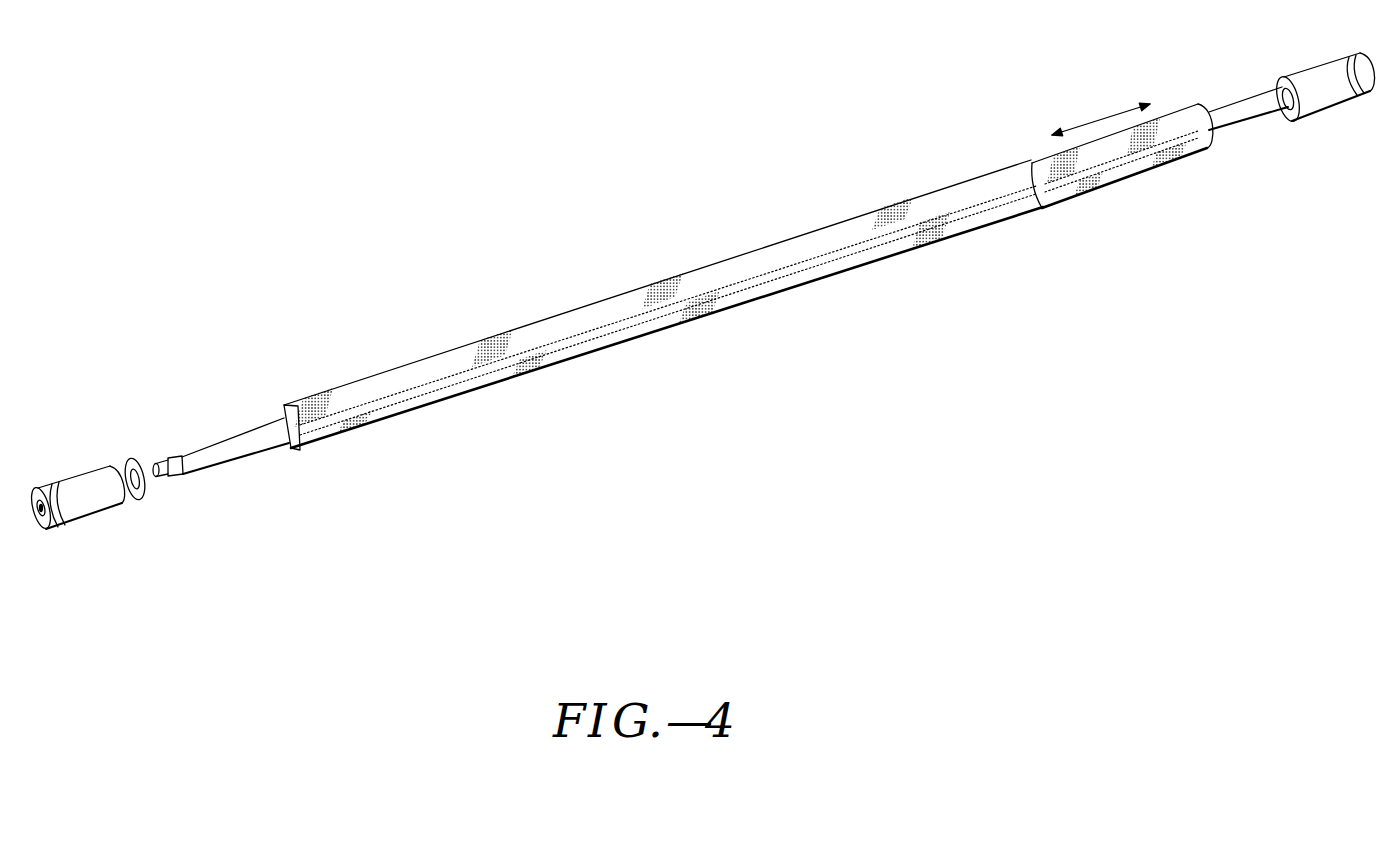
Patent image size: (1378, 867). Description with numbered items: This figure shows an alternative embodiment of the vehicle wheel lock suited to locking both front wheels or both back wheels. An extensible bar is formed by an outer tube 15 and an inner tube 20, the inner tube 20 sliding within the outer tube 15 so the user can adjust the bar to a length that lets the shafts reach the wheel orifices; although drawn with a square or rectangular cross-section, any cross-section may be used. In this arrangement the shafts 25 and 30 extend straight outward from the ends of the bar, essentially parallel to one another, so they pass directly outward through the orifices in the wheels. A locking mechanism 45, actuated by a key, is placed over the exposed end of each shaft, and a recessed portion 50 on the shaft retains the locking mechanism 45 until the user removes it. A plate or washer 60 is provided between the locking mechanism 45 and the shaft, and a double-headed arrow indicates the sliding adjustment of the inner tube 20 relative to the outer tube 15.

The outer tube 15 is at (663, 305).
The inner tube 20 is at (1122, 155).
The shaft 25 is at (235, 447).
The shaft 30 is at (1248, 118).
The locking mechanism 45 is at (701, 301).
The recessed portion 50 is at (169, 479).
The plate or washer 60 is at (129, 465).